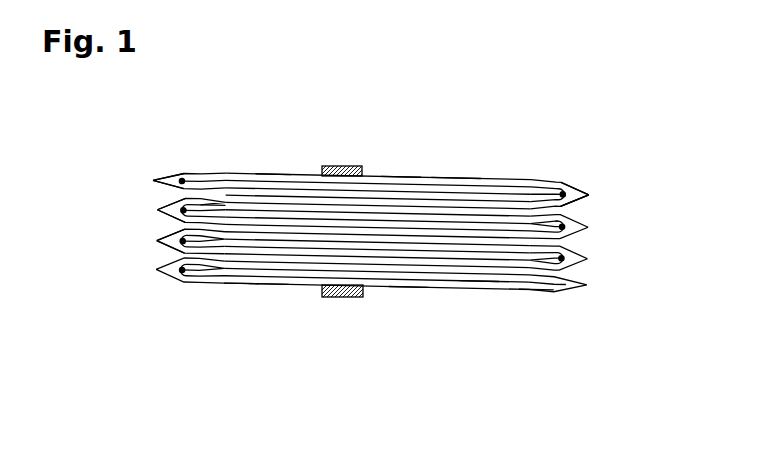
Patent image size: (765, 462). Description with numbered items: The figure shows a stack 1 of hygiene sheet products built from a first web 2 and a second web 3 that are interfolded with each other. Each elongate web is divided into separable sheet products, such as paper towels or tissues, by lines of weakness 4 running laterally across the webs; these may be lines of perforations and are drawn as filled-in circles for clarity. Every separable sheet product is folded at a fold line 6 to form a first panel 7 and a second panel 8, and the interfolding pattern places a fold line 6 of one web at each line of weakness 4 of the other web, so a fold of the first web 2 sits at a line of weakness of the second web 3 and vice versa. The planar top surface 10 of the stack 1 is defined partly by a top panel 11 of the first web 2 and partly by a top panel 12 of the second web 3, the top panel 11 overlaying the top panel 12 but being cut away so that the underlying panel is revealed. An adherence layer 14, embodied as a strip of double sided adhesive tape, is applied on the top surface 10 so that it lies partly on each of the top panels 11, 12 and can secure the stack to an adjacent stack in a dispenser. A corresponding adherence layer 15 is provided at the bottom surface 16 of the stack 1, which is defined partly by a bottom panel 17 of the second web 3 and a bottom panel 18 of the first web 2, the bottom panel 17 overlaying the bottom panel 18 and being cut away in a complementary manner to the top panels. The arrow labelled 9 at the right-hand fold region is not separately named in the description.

The stack 1 is at (533, 148).
The first web 2 is at (478, 288).
The second web 3 is at (547, 294).
The line of weakness 4 is at (176, 181).
The fold line 6 is at (594, 193).
The first panel 7 is at (205, 218).
The second panel 8 is at (160, 243).
The fold corner 9 is at (584, 224).
The top surface 10 is at (397, 162).
The top panel 11 is at (268, 172).
The top panel 12 is at (450, 180).
The adherence layer 14 is at (350, 167).
The adherence layer 15 is at (335, 298).
The bottom surface 16 is at (271, 296).
The bottom panel 17 is at (408, 292).
The bottom panel 18 is at (233, 288).